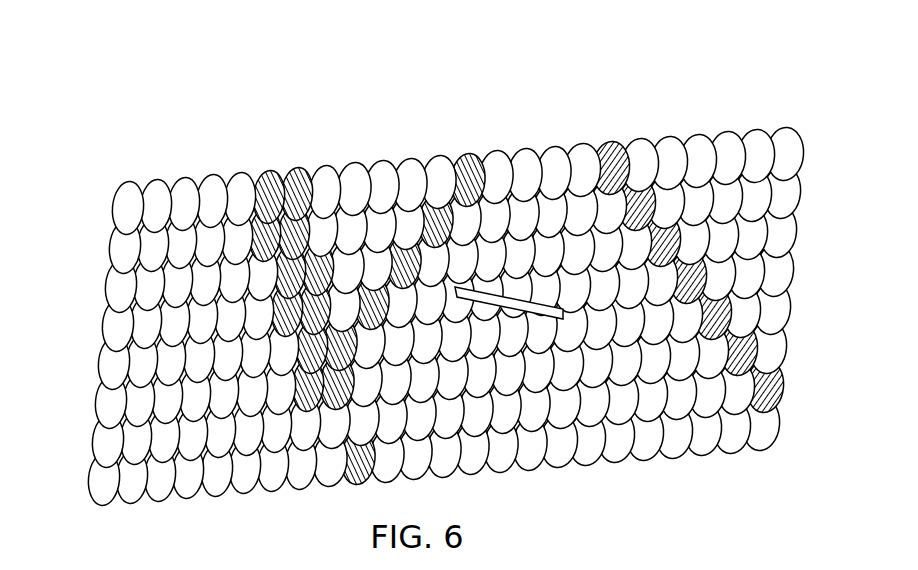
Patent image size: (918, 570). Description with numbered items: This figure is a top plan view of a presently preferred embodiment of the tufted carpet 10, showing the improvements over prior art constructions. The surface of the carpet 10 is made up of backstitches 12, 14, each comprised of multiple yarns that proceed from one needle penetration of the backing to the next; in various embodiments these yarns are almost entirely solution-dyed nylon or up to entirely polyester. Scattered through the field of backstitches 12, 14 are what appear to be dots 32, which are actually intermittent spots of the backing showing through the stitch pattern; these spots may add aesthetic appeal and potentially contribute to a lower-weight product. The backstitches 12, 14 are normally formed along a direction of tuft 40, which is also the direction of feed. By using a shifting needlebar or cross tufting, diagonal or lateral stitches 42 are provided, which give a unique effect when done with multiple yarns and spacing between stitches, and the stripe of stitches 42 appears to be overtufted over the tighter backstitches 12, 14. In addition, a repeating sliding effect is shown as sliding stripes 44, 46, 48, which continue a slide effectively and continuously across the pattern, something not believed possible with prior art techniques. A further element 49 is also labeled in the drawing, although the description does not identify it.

The carpet 10 is at (448, 259).
The backstitch 12 is at (358, 188).
The backstitch 14 is at (303, 175).
The dots 32 is at (148, 332).
The direction of tuft 40 is at (448, 259).
The diagonal or lateral stitches 42 is at (773, 392).
The sliding stripe 44 is at (657, 131).
The sliding stripe 46 is at (469, 178).
The sliding stripe 48 is at (265, 160).
The bar element 49 is at (515, 288).